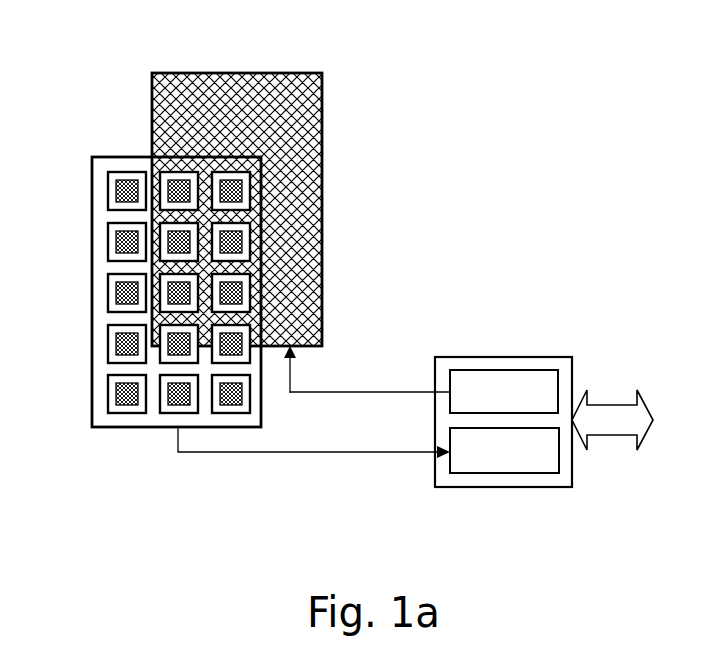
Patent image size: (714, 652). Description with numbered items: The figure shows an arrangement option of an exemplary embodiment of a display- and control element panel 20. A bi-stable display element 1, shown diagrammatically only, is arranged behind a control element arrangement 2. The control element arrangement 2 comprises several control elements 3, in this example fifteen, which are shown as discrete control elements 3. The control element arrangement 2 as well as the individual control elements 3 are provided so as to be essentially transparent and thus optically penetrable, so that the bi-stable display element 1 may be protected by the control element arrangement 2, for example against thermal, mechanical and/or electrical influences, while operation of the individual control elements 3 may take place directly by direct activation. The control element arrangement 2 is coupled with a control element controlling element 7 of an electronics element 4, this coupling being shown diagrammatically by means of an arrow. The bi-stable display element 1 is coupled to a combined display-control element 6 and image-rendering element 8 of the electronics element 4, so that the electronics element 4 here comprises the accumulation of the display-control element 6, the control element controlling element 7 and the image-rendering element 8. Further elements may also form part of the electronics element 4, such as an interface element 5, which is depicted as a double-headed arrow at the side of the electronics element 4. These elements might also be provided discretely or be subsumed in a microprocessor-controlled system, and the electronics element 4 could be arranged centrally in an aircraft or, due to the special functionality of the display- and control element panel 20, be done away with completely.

The display- and control element panel 20 is at (501, 89).
The bi-stable display element 1 is at (323, 103).
The control element arrangement 2 is at (92, 313).
The control elements 3 is at (62, 212).
The electronics element 4 is at (530, 360).
The interface element 5 is at (608, 412).
The display-control element 6 is at (504, 341).
The image-rendering element 8 is at (490, 382).
The control element controlling element 7 is at (512, 457).